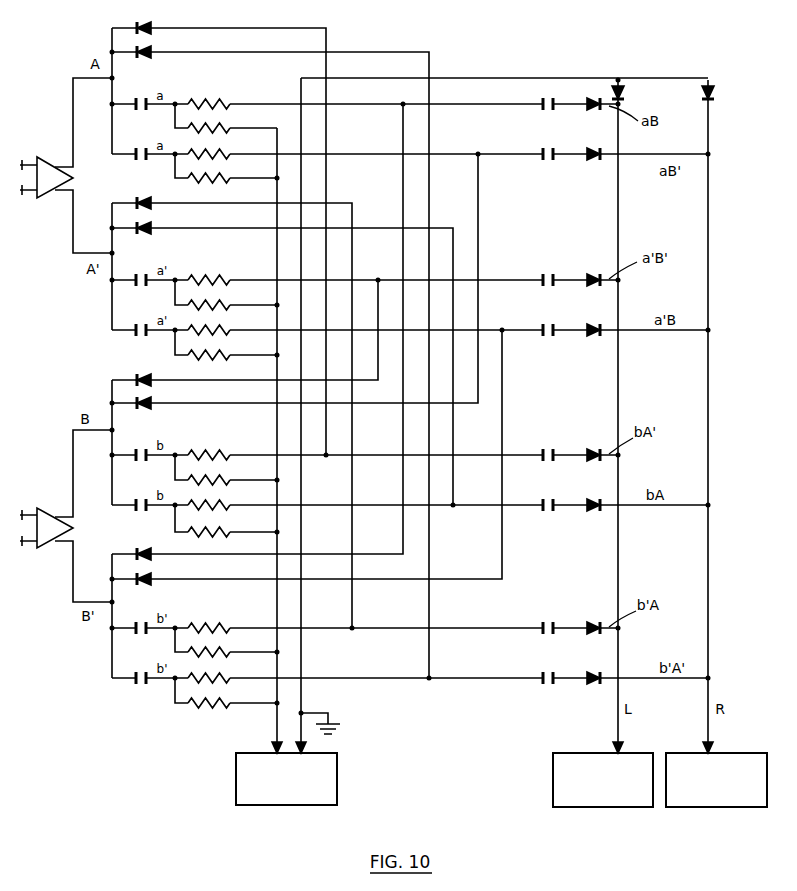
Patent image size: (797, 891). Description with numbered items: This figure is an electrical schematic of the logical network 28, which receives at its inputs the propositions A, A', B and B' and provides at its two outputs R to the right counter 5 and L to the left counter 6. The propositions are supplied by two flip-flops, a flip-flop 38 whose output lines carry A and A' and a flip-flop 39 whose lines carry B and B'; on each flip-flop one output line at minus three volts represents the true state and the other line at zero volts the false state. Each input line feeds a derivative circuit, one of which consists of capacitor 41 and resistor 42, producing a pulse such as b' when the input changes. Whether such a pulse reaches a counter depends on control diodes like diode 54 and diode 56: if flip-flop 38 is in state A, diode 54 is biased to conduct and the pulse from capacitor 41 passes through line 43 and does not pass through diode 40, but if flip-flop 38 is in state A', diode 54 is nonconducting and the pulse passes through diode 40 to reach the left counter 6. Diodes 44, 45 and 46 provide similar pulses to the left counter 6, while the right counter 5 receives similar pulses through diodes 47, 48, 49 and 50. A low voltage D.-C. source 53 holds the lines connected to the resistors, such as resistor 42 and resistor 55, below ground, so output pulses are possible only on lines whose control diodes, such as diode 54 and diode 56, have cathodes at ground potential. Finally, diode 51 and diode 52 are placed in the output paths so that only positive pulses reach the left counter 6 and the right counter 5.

The right counter 5 is at (609, 810).
The left counter 6 is at (712, 810).
The logical network 28 is at (446, 62).
The flip-flop 38 is at (47, 162).
The flip-flop 39 is at (47, 512).
The diode 40 is at (600, 676).
The capacitor 41 is at (143, 686).
The resistor 42 is at (205, 706).
The line 43 is at (431, 670).
The diode 44 is at (596, 503).
The diode 45 is at (598, 328).
The diode 46 is at (596, 150).
The diode 47 is at (596, 626).
The diode 48 is at (596, 452).
The diode 49 is at (596, 277).
The diode 50 is at (600, 98).
The diode 51 is at (625, 91).
The diode 52 is at (713, 96).
The low voltage D.-C. source 53 is at (236, 792).
The diode 54 is at (152, 57).
The resistor 55 is at (215, 656).
The diode 56 is at (152, 232).